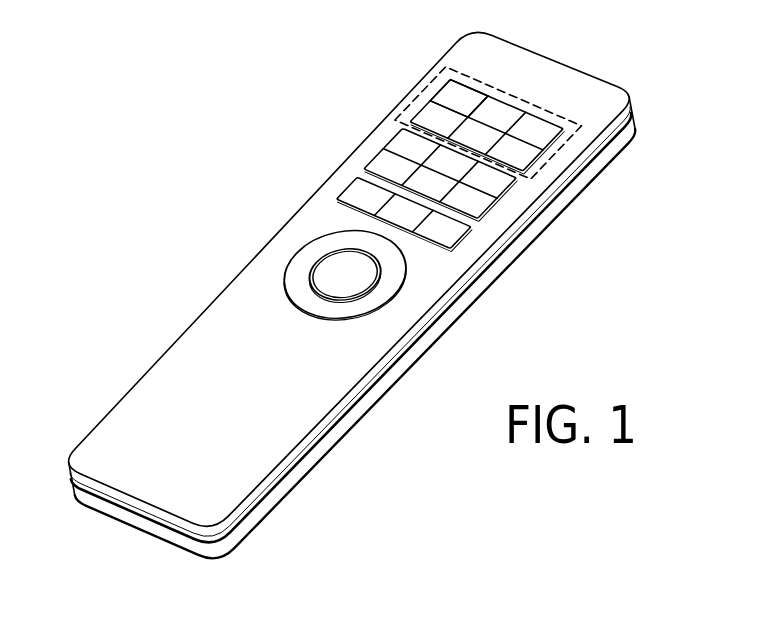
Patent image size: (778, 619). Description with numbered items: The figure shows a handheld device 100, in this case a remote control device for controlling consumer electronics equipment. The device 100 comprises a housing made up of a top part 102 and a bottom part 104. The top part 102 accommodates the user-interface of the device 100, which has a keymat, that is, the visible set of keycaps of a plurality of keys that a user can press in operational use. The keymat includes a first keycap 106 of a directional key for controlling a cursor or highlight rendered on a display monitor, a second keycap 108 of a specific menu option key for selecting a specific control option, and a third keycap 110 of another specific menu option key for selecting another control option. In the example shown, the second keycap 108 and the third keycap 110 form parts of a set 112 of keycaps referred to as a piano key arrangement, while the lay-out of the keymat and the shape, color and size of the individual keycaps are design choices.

The device 100 is at (155, 125).
The top part 102 is at (153, 415).
The bottom part 104 is at (327, 452).
The first keycap 106 is at (307, 262).
The second keycap 108 is at (482, 135).
The third keycap 110 is at (452, 98).
The set of keycaps 112 is at (412, 90).